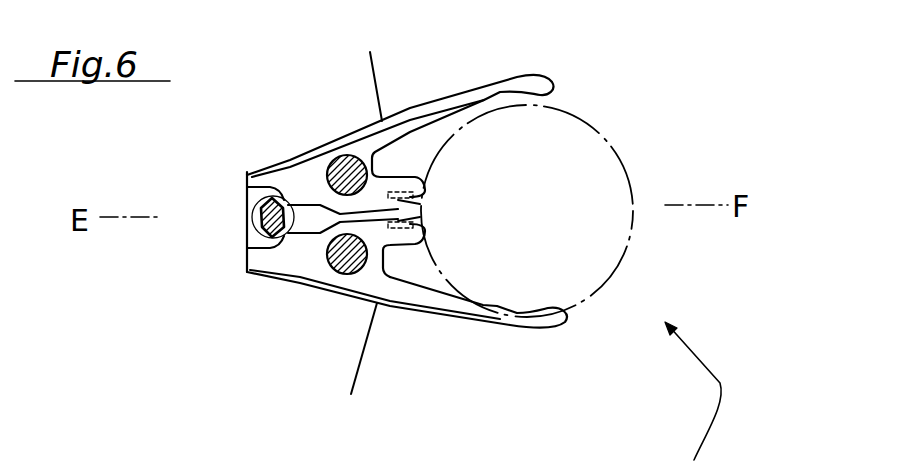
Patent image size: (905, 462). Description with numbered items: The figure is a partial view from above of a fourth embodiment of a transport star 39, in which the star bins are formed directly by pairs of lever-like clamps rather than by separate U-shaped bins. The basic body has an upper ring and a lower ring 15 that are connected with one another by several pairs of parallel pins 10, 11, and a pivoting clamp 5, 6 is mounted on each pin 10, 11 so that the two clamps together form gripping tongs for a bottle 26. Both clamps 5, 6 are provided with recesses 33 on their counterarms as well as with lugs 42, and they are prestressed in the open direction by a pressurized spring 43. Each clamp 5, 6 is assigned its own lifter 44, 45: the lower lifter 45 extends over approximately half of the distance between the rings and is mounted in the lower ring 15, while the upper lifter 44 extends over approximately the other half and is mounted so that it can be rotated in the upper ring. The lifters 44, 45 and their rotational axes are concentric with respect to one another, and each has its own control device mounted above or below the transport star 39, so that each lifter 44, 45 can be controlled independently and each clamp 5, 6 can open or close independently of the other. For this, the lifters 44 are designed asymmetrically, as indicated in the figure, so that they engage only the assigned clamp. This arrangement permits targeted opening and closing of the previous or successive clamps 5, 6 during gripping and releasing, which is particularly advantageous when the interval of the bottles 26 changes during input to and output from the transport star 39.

The pivoting clamp 5 is at (517, 84).
The pivoting clamp 6 is at (532, 320).
The pin 10 is at (347, 265).
The pin 11 is at (348, 170).
The lower ring 15 is at (347, 338).
The bottle 26 is at (623, 262).
The recess 33 is at (247, 190).
The transport star 39 is at (719, 391).
The lug 42 is at (404, 172).
The pressurized spring 43 is at (420, 209).
The upper lifter 44 is at (258, 240).
The lower lifter 45 is at (262, 213).